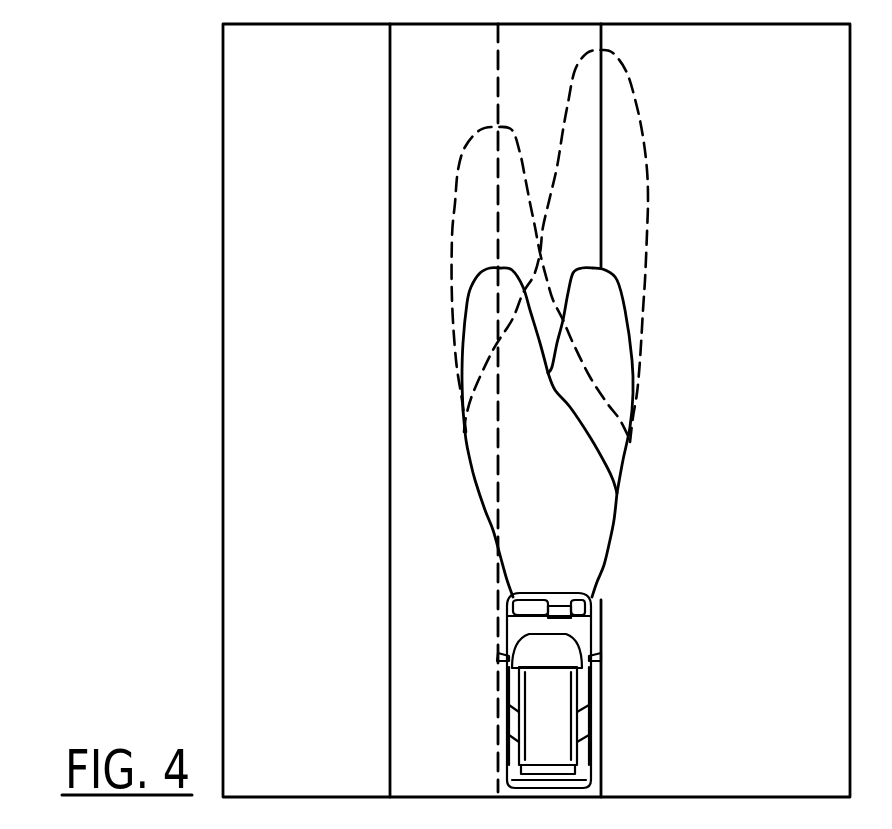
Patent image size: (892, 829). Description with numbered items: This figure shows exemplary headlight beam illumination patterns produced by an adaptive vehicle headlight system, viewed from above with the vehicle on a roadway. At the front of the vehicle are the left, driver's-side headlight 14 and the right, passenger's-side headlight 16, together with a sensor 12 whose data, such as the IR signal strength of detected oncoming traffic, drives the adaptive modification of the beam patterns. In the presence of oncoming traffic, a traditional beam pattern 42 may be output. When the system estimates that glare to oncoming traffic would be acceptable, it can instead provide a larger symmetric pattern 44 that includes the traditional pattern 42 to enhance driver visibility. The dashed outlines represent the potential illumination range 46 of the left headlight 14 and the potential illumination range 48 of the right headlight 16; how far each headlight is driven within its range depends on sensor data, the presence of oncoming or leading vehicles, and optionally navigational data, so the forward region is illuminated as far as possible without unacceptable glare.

The sensor 12 is at (552, 594).
The first headlight 14 is at (510, 604).
The second headlight 16 is at (590, 603).
The traditional beam pattern 42 is at (610, 330).
The symmetric pattern 44 is at (562, 492).
The potential illumination range 46 is at (450, 222).
The potential illumination range 48 is at (650, 215).